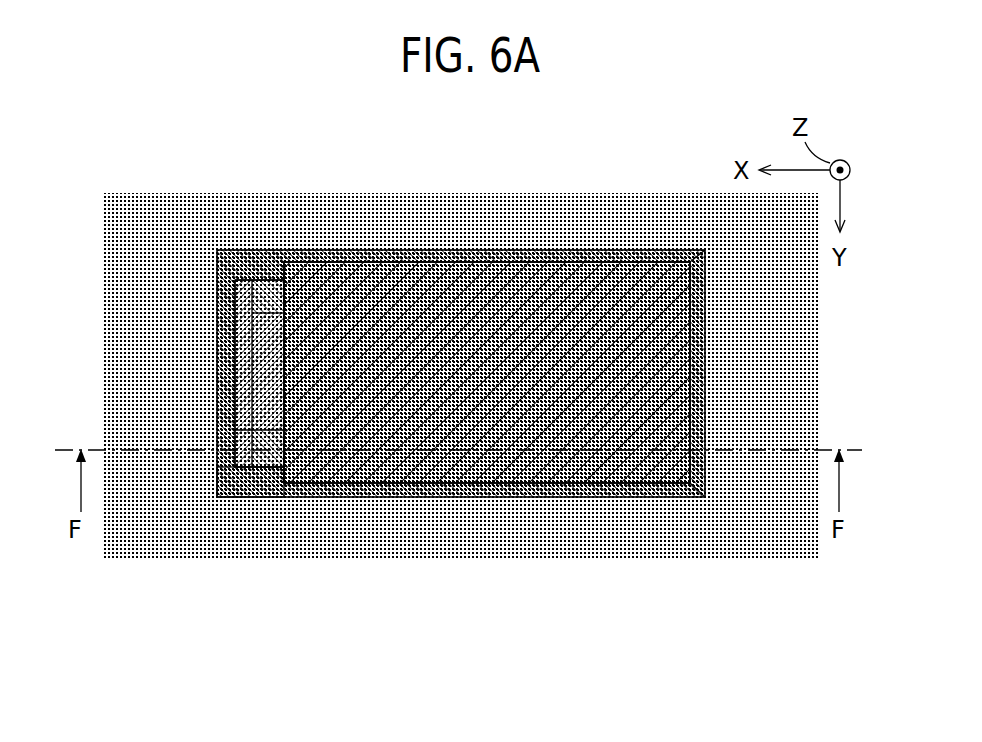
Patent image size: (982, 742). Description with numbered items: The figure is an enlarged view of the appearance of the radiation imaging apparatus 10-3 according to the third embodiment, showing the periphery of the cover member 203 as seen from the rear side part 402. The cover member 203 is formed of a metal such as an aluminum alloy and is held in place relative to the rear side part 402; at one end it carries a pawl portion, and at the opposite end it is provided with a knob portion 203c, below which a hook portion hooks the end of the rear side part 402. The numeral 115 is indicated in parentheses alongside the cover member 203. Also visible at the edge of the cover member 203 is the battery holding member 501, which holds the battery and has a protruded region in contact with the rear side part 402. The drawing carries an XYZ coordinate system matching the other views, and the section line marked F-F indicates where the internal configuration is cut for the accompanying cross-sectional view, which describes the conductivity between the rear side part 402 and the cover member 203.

The radiation imaging apparatus 10-3 is at (250, 162).
The knob portion 203c is at (250, 372).
The battery holding member 501 is at (263, 468).
The rear side part 402 is at (447, 500).
The cover member 203 is at (540, 470).
The terminal 115 is at (487, 372).